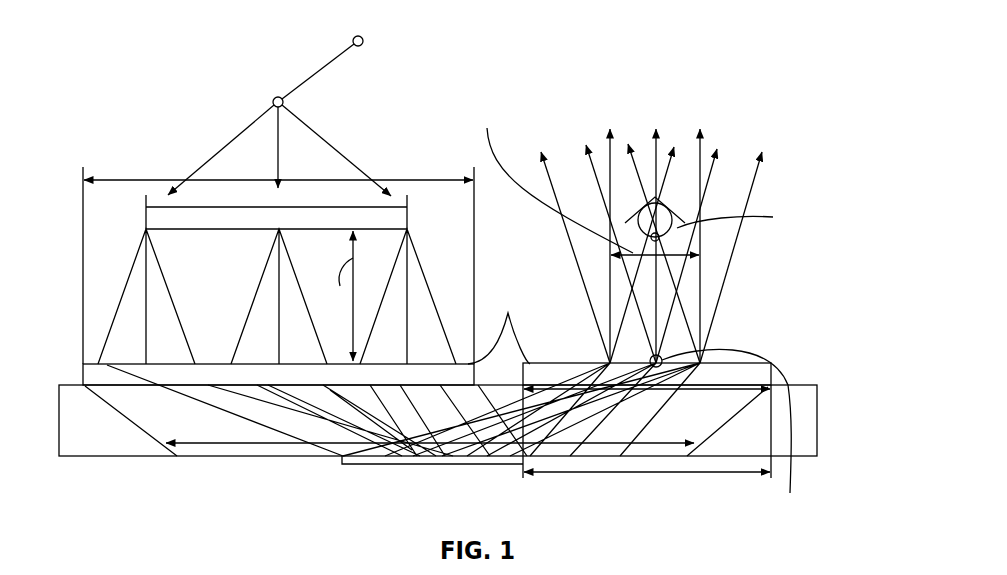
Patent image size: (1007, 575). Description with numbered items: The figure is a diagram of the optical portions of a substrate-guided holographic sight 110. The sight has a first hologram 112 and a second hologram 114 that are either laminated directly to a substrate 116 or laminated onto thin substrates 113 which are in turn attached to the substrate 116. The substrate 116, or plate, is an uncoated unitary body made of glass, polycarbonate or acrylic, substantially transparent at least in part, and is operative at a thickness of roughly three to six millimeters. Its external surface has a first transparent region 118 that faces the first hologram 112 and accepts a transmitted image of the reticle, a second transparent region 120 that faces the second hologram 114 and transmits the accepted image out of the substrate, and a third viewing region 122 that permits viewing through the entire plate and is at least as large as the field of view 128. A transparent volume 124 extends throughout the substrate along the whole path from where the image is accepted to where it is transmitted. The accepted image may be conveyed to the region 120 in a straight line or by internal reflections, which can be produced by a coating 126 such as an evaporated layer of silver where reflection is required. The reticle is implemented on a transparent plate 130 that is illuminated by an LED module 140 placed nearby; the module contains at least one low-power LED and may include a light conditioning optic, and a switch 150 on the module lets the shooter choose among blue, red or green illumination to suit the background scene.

The substrate-guided holographic sight 110 is at (151, 70).
The first hologram 112 is at (215, 364).
The thin substrates 113 is at (508, 313).
The second hologram 114 is at (768, 356).
The substrate 116 is at (815, 415).
The first transparent region 118 is at (303, 179).
The second transparent region 120 is at (679, 392).
The third viewing region 122 is at (627, 474).
The transparent volume 124 is at (220, 445).
The coating 126 is at (376, 470).
The field of view 128 is at (645, 290).
The transparent plate 130 is at (248, 207).
The LED module 140 is at (273, 96).
The switch 150 is at (355, 35).